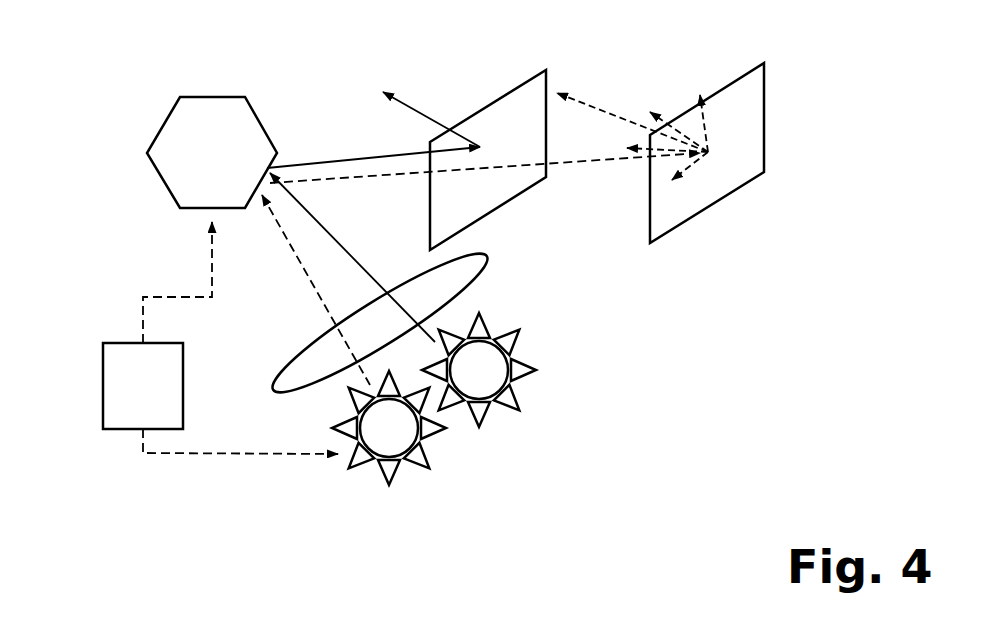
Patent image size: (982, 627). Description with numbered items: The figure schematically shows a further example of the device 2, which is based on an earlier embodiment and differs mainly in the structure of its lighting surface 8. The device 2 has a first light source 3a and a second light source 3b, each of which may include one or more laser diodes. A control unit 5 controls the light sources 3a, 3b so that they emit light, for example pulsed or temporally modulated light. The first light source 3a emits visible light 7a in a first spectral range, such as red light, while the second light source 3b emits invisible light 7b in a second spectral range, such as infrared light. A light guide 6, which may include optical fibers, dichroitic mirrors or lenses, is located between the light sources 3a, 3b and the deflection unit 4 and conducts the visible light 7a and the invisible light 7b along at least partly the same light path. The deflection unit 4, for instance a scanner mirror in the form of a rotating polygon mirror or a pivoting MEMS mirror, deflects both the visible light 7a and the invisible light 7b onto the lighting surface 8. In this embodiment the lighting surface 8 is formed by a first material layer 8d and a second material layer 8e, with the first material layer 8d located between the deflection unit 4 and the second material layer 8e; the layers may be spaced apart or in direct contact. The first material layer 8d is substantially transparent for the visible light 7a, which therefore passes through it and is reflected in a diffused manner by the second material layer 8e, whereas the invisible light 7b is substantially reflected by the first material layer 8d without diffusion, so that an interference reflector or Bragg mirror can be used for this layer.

The device 2 is at (692, 365).
The first light source 3a is at (407, 472).
The second light source 3b is at (497, 413).
The deflection unit 4 is at (220, 100).
The control unit 5 is at (103, 380).
The light guide 6 is at (295, 345).
The visible light 7a is at (310, 283).
The invisible light 7b is at (335, 238).
The lighting surface 8 is at (738, 235).
The first material layer 8d is at (525, 95).
The second material layer 8e is at (738, 95).